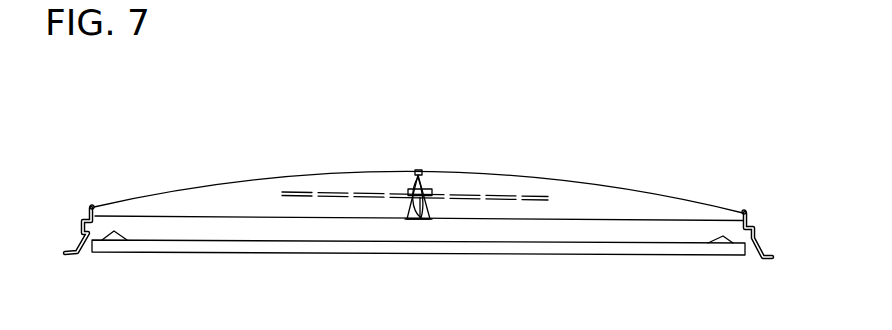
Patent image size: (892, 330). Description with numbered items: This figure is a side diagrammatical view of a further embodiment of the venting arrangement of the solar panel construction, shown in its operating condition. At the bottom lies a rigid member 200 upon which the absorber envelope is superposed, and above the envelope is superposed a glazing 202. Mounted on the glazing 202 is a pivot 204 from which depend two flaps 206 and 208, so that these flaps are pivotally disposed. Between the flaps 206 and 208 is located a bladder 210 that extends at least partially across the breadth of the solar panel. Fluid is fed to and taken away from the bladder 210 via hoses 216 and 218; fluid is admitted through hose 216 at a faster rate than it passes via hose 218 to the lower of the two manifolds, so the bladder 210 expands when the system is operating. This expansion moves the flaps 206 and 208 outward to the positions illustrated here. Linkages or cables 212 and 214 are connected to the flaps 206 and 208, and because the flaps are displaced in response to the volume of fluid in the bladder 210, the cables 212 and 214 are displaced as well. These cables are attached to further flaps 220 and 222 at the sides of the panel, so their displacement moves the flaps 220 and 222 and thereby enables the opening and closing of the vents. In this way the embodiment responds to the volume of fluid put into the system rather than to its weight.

The rigid member 200 is at (273, 247).
The glazing 202 is at (348, 172).
The pivot 204 is at (420, 170).
The flap 206 is at (407, 205).
The flap 208 is at (430, 205).
The bladder 210 is at (427, 220).
The linkage or cable 212 is at (217, 217).
The linkage or cable 214 is at (615, 221).
The hose 216 is at (400, 187).
The hose 218 is at (533, 193).
The flap 220 is at (747, 217).
The flap 222 is at (97, 216).